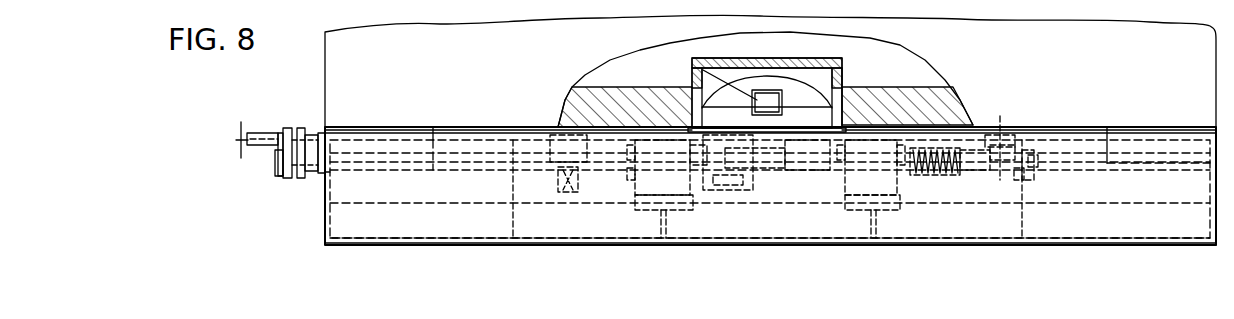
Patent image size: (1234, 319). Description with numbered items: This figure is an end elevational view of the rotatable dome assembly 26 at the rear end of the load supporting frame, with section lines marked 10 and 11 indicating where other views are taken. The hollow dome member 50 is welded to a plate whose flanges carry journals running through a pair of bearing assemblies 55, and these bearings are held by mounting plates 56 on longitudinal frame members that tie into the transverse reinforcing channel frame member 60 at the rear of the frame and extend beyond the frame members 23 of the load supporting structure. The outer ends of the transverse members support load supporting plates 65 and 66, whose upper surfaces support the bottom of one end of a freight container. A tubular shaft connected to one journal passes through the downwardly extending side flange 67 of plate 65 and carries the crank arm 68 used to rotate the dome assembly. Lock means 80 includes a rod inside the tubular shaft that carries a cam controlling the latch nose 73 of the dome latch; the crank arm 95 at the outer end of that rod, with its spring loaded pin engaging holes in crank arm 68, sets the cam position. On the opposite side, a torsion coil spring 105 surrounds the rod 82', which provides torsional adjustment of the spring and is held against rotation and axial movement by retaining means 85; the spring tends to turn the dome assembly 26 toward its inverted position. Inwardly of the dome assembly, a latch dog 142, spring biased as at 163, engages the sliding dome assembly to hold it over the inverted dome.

The section line 10- 10 is at (767, 92).
The section line 11- 11 is at (228, 118).
The frame members 23 is at (511, 187).
The rotatable dome assembly 26 is at (818, 78).
The hollow dome member 50 is at (812, 100).
The bearing assemblies 55 is at (686, 196).
The mounting plates 56 is at (637, 208).
The reinforcing channel frame member 60 is at (500, 232).
The load supporting plate 65 is at (376, 126).
The load supporting plate 66 is at (1134, 127).
The side flange 67 is at (323, 214).
The crank arm 68 is at (300, 182).
The latch nose 73 is at (700, 61).
The lock means 80 is at (264, 132).
The rod 82' is at (1005, 141).
The retaining means 85 is at (1036, 184).
The crank arm 95 is at (280, 160).
The torsion coil spring 105 is at (950, 180).
The latch dog 142 is at (982, 168).
The spring 163 is at (567, 192).